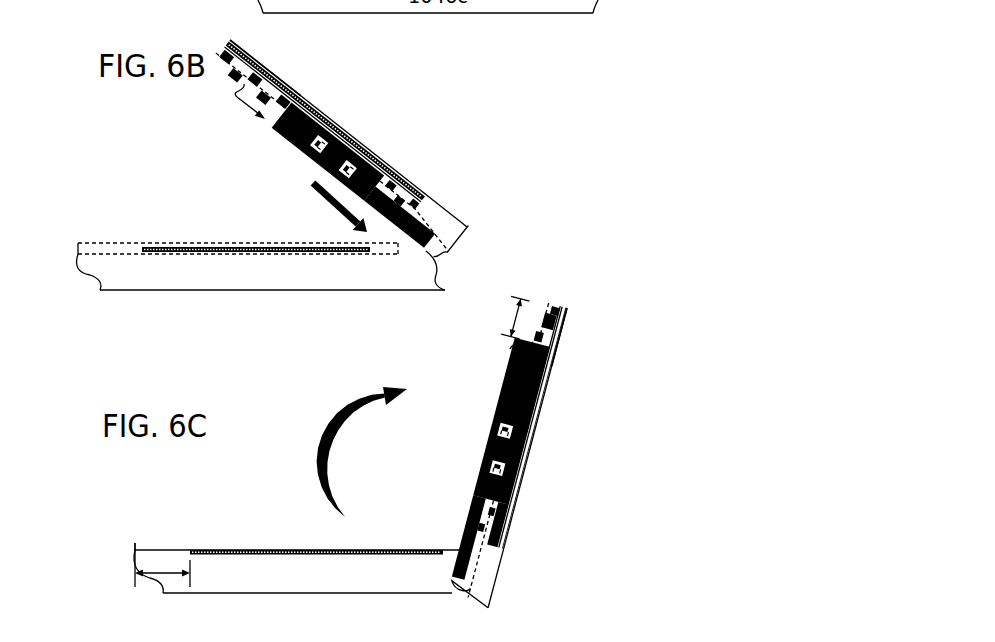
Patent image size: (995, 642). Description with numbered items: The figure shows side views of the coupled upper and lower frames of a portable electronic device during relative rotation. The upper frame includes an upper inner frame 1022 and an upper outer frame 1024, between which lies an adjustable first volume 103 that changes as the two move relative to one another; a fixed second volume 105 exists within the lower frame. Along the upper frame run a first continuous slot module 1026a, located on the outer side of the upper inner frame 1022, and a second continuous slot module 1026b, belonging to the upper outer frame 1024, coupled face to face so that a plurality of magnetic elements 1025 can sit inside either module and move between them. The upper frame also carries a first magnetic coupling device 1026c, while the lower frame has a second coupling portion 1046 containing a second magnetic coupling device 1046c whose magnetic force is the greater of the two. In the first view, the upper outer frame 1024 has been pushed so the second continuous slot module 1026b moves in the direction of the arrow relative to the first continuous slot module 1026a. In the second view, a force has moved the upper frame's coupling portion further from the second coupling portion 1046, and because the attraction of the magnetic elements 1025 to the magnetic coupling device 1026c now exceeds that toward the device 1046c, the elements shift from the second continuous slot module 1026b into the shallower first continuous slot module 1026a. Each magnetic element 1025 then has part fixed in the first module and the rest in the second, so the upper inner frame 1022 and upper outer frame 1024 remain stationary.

In FIG. 6C, the first volume 103 is at (527, 303).
In FIG. 6C, the second volume 105 is at (135, 573).
In FIG. 6B, the upper inner frame 1022 is at (441, 205).
In FIG. 6C, the upper inner frame 1022 is at (500, 573).
In FIG. 6B, the upper outer frame 1024 is at (262, 113).
In FIG. 6C, the upper outer frame 1024 is at (505, 358).
In FIG. 6B, the magnetic elements 1025 is at (351, 152).
In FIG. 6C, the magnetic elements 1025 is at (546, 460).
In FIG. 6B, the first continuous slot module 1026a is at (228, 42).
In FIG. 6C, the first continuous slot module 1026a is at (473, 528).
In FIG. 6B, the second continuous slot module 1026b is at (300, 148).
In FIG. 6C, the second continuous slot module 1026b is at (498, 407).
In FIG. 6B, the first magnetic coupling device 1026c is at (386, 167).
In FIG. 6C, the first magnetic coupling device 1026c is at (513, 520).
In FIG. 6B, the second coupling portion 1046 is at (188, 243).
In FIG. 6B, the second magnetic coupling device 1046c is at (292, 252).
In FIG. 6C, the second magnetic coupling device 1046c is at (290, 555).